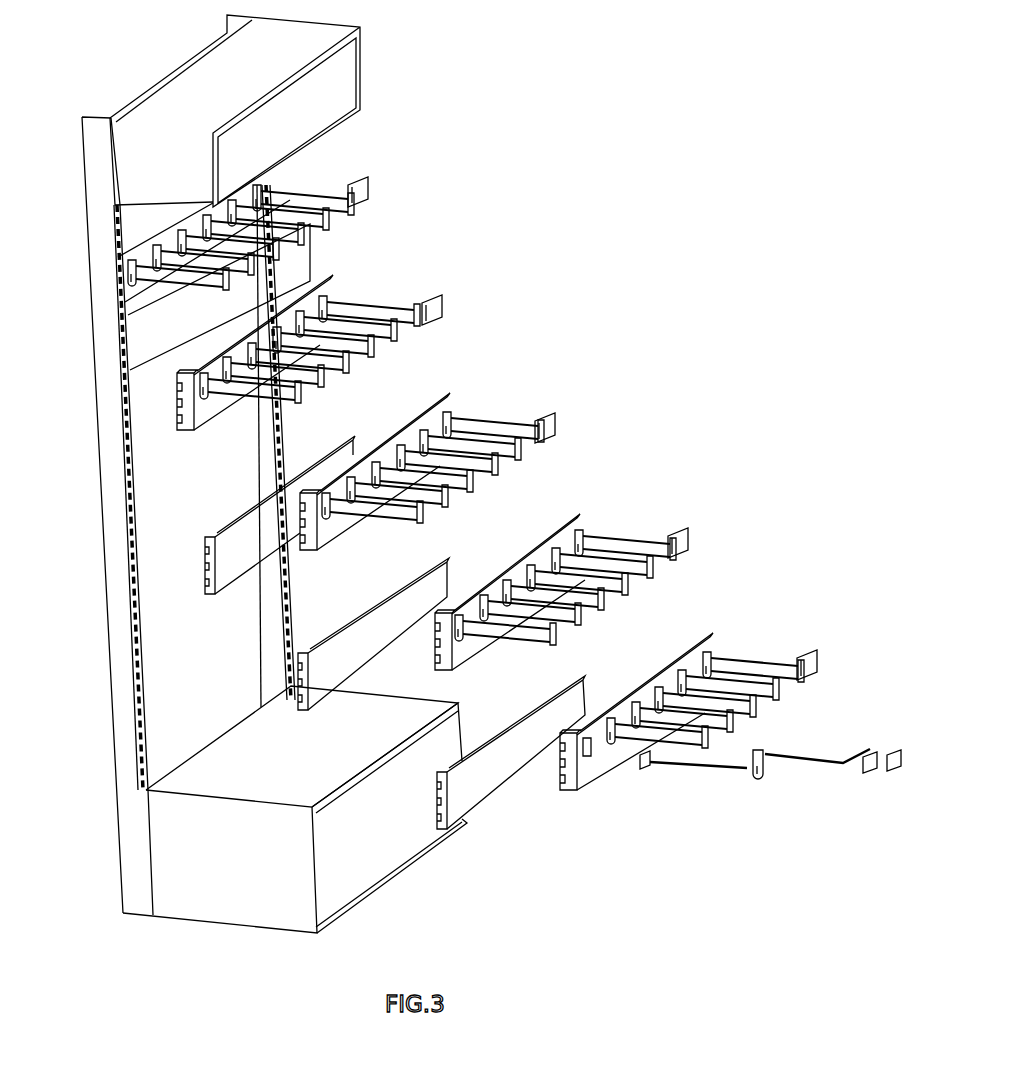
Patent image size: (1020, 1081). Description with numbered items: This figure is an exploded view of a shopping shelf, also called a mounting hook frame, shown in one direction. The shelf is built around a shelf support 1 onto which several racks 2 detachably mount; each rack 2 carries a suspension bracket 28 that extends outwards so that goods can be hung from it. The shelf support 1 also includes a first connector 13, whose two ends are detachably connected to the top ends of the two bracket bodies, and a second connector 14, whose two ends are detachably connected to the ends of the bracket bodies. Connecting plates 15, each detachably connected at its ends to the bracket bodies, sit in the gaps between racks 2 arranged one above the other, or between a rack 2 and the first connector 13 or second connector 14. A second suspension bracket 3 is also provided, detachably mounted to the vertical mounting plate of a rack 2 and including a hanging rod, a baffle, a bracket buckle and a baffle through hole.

The shelf support 1 is at (123, 655).
The rack 2 is at (330, 277).
The second suspension bracket 3 is at (817, 757).
The first connector 13 is at (223, 62).
The second connector 14 is at (170, 868).
The connecting plate 15 is at (132, 342).
The suspension bracket 28 is at (693, 763).